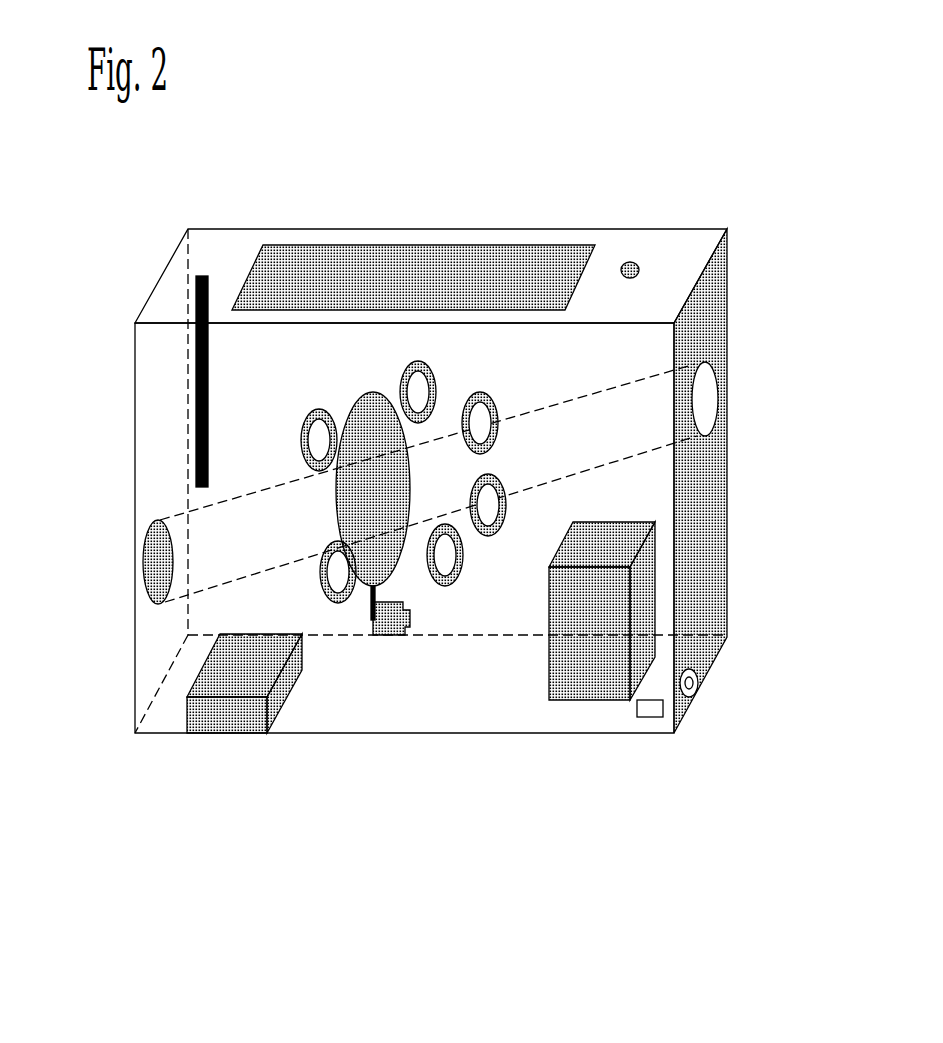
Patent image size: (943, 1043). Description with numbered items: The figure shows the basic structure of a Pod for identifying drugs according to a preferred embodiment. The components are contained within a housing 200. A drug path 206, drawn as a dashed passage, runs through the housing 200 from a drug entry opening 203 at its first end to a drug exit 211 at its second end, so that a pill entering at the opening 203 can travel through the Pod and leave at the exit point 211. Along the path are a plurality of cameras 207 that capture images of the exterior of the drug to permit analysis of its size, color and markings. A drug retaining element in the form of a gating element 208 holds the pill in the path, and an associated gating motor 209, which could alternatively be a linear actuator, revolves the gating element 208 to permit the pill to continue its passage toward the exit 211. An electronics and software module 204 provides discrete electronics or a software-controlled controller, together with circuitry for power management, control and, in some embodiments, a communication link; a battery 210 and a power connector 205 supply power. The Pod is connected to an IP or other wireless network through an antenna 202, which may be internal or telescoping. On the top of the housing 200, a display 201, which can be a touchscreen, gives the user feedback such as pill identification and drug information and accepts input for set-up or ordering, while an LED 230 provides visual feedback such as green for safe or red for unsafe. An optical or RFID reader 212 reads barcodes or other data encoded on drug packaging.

The housing 200 is at (522, 227).
The display 201 is at (312, 277).
The antenna 202 is at (198, 342).
The drug entry opening 203 is at (698, 392).
The electronics and software module 204 is at (645, 607).
The power connector 205 is at (697, 683).
The drug path 206 is at (540, 440).
The camera 207 is at (443, 553).
The gating element 208 is at (363, 488).
The gating motor 209 is at (380, 617).
The battery 210 is at (250, 652).
The drug exit 211 is at (150, 556).
The optical or RFID reader 212 is at (657, 701).
The LED 230 is at (640, 262).